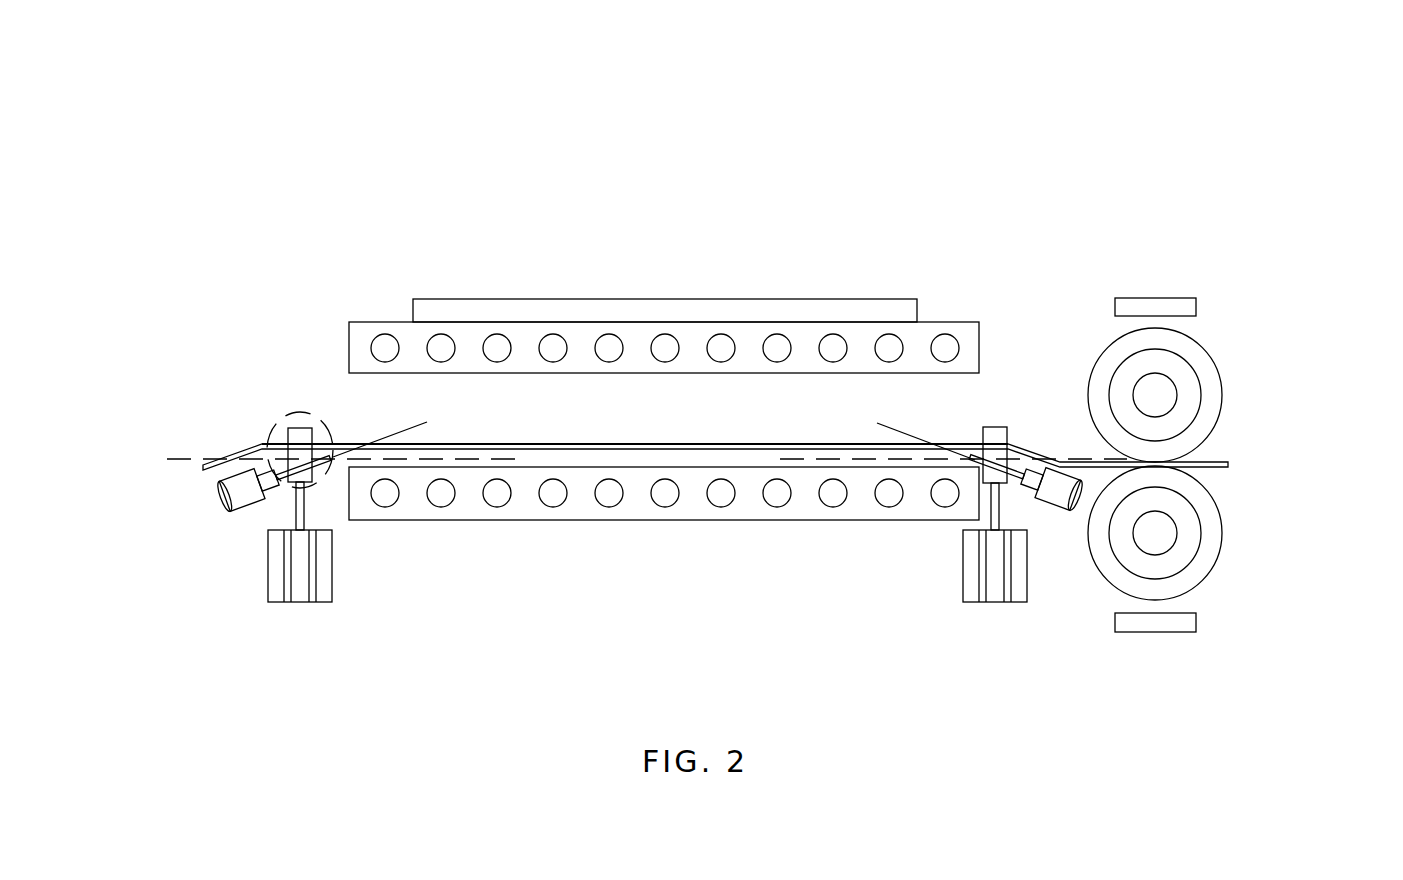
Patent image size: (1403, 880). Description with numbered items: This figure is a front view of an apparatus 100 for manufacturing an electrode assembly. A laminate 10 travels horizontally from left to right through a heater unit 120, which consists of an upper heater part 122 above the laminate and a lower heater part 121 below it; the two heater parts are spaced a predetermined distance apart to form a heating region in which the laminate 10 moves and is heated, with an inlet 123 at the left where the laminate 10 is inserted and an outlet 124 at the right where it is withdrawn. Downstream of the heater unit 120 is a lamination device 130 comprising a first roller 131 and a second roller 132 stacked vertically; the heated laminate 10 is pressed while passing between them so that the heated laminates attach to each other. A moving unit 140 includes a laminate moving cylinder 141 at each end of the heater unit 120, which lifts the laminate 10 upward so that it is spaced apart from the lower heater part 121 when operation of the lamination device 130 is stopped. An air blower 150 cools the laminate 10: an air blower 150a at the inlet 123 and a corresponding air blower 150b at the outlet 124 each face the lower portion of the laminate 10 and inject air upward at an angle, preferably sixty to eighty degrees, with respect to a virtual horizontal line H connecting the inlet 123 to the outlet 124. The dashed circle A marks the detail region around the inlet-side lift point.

The apparatus for manufacturing an electrode assembly 100 is at (1063, 173).
The laminate 10 is at (638, 450).
The heater unit 120 is at (907, 212).
The lower heater part 121 is at (836, 472).
The upper heater part 122 is at (803, 330).
The inlet 123 is at (353, 418).
The outlet 124 is at (970, 402).
The lamination device 130 is at (1229, 465).
The first roller 131 is at (1215, 520).
The second roller 132 is at (1208, 413).
The moving unit 140 is at (647, 564).
The laminate moving cylinder 141 is at (325, 598).
The air blower 150 is at (628, 574).
The air blower disposed at the inlet 150a is at (225, 508).
The air blower disposed at the outlet 150b is at (1062, 510).
The detail region A is at (302, 410).
The virtual horizontal line H is at (173, 457).